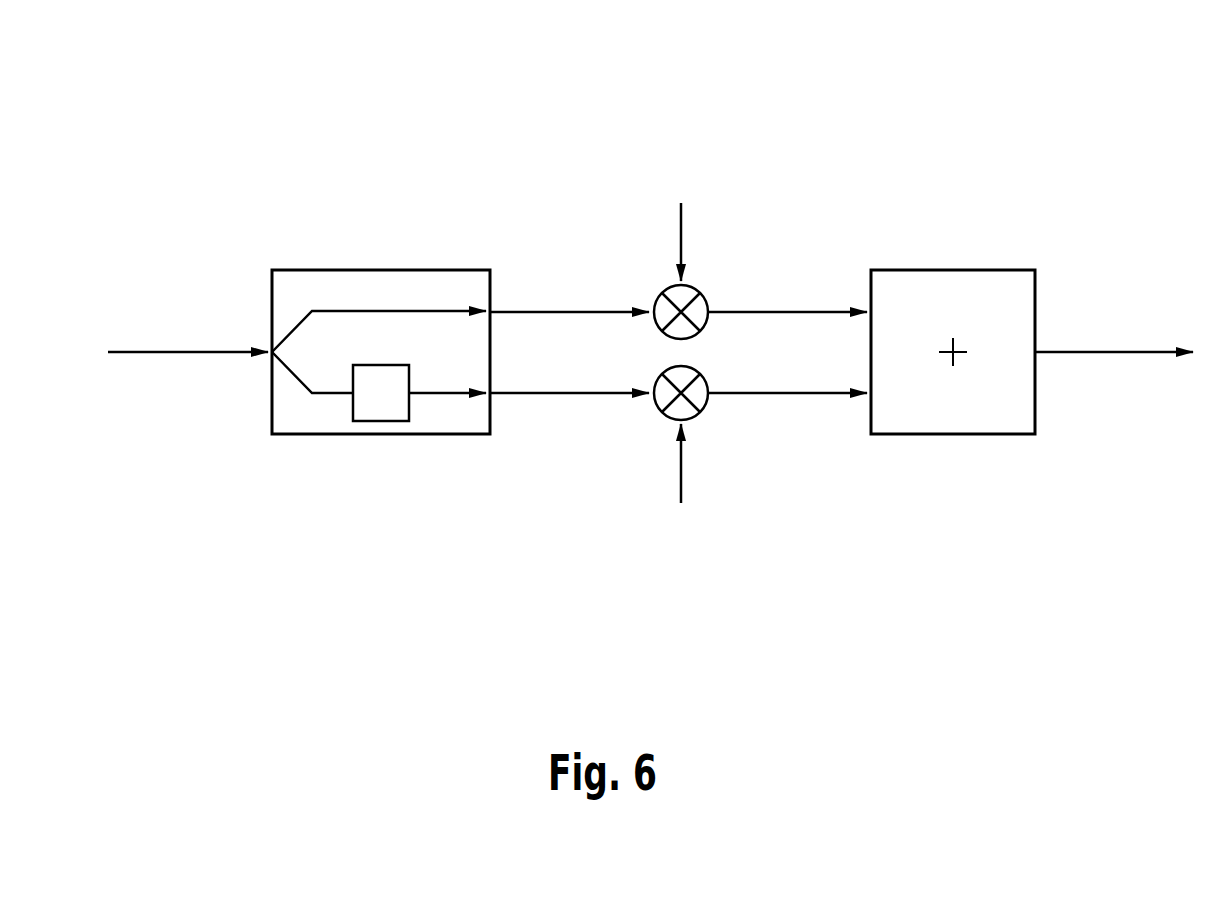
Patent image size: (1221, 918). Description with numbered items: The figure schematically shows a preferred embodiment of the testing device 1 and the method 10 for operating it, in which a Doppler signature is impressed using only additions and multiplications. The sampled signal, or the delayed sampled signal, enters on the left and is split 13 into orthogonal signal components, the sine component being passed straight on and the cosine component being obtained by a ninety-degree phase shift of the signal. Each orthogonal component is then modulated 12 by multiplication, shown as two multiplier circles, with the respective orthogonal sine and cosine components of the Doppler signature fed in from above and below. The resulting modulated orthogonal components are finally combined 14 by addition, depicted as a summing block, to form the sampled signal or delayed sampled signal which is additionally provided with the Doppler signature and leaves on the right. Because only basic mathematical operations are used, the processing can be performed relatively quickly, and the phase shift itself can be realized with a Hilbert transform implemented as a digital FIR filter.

The testing device 1 is at (650, 285).
The method 10 is at (427, 104).
The modulating 12 is at (705, 325).
The splitting 13 is at (381, 352).
The combining 14 is at (953, 352).